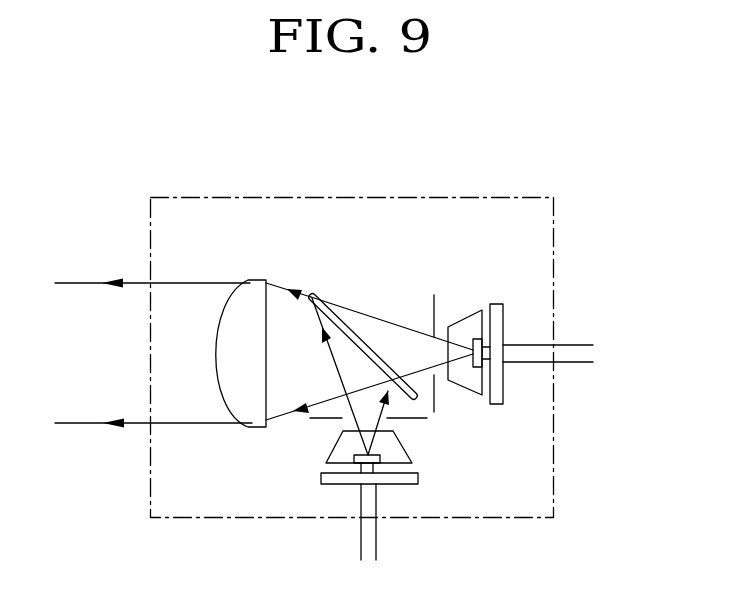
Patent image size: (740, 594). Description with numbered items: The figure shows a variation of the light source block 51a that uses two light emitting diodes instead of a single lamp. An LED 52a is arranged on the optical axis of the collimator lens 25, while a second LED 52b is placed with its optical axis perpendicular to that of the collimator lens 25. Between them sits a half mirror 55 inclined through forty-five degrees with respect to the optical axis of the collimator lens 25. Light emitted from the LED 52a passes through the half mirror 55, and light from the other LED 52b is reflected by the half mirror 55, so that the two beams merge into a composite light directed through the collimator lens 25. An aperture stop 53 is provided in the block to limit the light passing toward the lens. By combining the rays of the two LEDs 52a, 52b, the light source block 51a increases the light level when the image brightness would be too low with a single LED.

The collimator lens 25 is at (255, 280).
The half mirror 55 is at (314, 292).
The aperture stop 53 is at (431, 304).
The LED 52a is at (483, 298).
The LED 52b is at (452, 472).
The light source block 51a is at (480, 190).